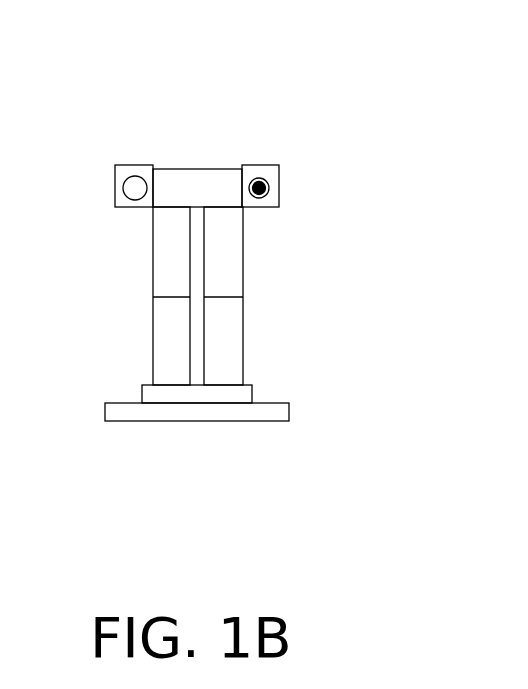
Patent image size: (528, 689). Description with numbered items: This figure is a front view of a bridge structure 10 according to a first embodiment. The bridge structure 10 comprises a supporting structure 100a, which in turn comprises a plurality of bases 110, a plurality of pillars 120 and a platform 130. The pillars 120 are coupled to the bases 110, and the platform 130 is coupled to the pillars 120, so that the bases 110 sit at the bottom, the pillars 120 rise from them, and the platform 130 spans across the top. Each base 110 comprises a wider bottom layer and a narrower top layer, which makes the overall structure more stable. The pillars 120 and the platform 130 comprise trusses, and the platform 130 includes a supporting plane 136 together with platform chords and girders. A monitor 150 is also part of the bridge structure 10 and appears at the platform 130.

The bridge structure 10 is at (483, 562).
The supporting structure 100a is at (269, 281).
The base 110 is at (200, 433).
The pillar 120 is at (152, 262).
The platform 130 is at (133, 152).
The supporting plane 136 is at (260, 165).
The monitor 150 is at (281, 186).